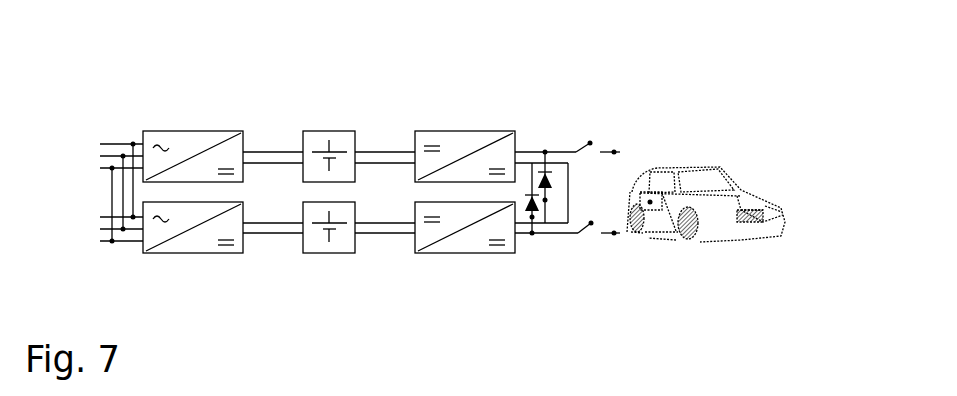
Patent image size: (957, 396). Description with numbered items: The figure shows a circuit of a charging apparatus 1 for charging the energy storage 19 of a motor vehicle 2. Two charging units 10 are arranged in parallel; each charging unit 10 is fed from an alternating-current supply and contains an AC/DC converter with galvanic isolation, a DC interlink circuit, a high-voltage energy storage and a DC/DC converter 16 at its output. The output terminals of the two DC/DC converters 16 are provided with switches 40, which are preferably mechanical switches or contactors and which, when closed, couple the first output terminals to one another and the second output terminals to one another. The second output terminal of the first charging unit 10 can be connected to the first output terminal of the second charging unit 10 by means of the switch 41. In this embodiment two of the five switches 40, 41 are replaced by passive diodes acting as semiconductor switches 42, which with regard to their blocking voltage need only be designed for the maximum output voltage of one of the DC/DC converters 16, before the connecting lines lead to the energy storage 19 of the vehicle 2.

The charging apparatus 1 is at (686, 77).
The motor vehicle 2 is at (746, 196).
The charging unit 10 is at (277, 106).
The DC/DC converter 16 is at (462, 142).
The energy storage 19 is at (650, 204).
The switch 40 is at (590, 143).
The switch 41 is at (570, 190).
The semiconductor switch 42 is at (546, 202).